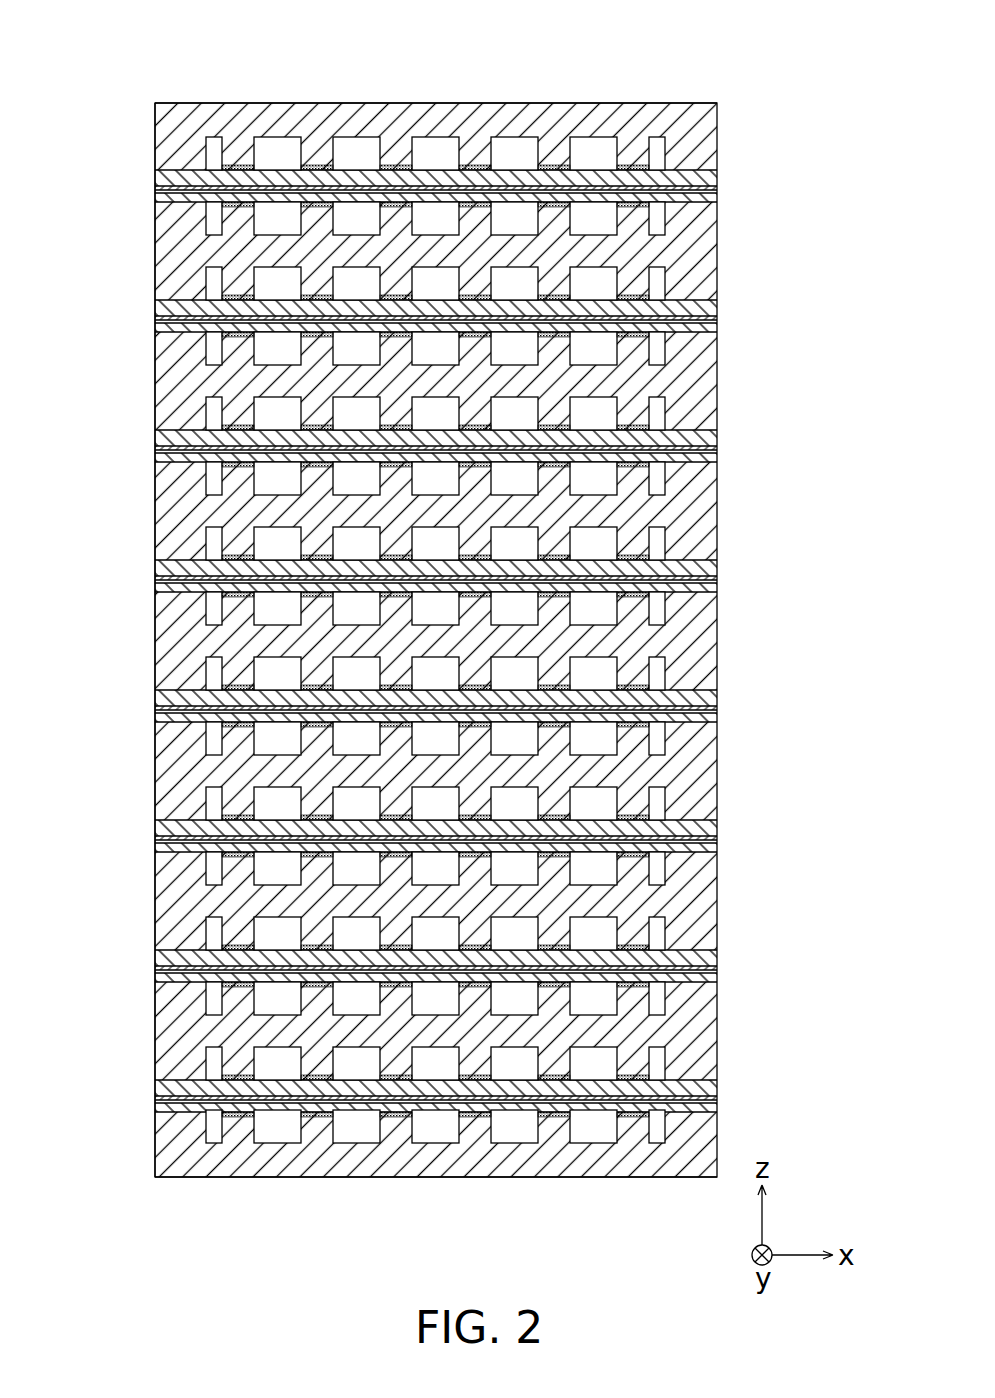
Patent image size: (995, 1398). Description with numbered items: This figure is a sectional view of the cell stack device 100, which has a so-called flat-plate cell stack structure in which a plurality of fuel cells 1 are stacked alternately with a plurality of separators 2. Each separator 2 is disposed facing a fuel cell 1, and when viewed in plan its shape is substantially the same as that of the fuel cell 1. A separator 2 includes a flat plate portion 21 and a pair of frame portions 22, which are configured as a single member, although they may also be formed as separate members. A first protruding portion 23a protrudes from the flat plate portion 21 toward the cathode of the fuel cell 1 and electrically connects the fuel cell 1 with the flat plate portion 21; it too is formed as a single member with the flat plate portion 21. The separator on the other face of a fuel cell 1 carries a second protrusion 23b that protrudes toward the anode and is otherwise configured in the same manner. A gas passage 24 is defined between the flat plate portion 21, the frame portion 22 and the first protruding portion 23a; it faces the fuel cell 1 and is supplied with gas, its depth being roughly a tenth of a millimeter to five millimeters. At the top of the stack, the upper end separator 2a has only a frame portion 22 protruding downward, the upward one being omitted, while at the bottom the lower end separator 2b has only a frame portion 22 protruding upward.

The cell stack device 100 is at (693, 53).
The fuel cell 1 is at (728, 191).
The separator 2 is at (728, 252).
The upper end separator 2a is at (727, 141).
The lower end separator 2b is at (727, 1143).
The flat plate portion 21 is at (275, 113).
The frame portion 22 is at (163, 159).
The first protruding portion 23a is at (247, 220).
The second protrusion 23b is at (473, 152).
The gas passage 24 is at (350, 147).